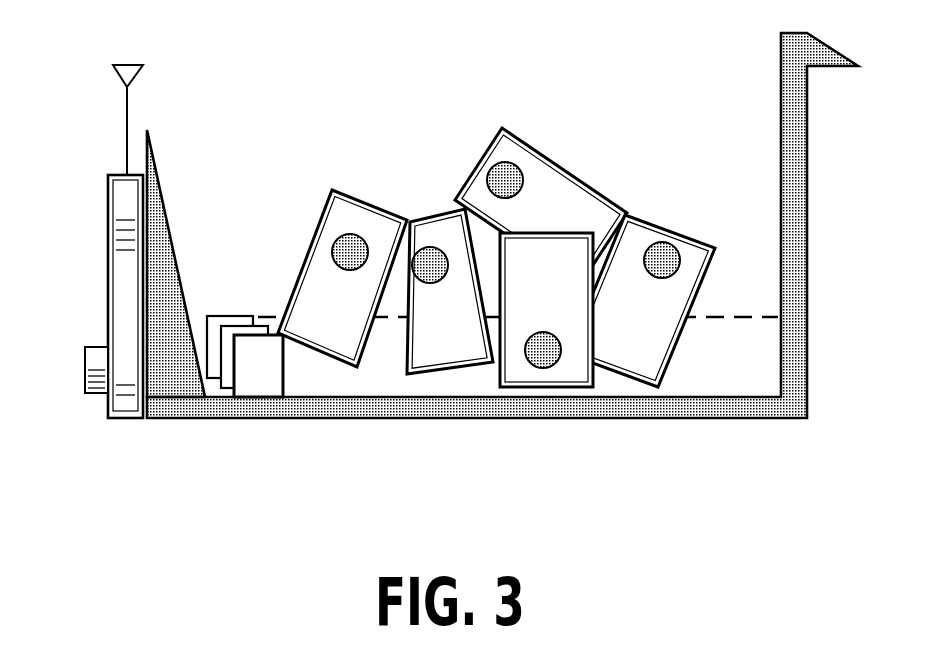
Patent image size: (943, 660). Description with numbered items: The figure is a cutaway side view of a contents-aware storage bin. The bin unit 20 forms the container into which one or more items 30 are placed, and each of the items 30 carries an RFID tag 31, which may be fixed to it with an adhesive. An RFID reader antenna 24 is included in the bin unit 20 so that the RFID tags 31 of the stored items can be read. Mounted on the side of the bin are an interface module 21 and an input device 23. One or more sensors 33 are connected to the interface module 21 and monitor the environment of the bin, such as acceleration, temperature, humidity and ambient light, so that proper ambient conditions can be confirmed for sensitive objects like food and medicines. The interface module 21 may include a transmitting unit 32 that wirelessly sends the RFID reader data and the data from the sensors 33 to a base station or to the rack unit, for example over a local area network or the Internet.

The bin unit 20 is at (753, 418).
The interface module 21 is at (126, 395).
The input device 23 is at (90, 365).
The RFID reader antenna 24 is at (752, 322).
The items 30 is at (496, 299).
The RFID tag 31 is at (438, 277).
The transmitting unit 32 is at (127, 108).
The sensors 33 is at (256, 382).